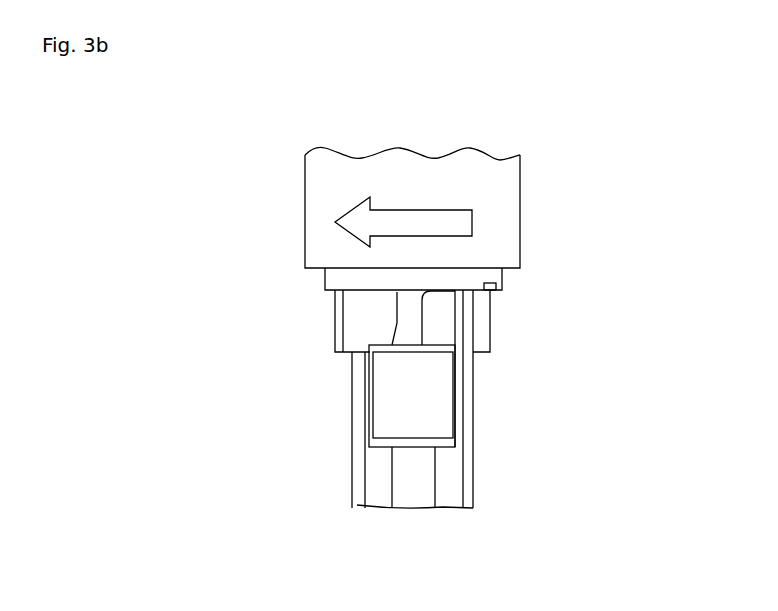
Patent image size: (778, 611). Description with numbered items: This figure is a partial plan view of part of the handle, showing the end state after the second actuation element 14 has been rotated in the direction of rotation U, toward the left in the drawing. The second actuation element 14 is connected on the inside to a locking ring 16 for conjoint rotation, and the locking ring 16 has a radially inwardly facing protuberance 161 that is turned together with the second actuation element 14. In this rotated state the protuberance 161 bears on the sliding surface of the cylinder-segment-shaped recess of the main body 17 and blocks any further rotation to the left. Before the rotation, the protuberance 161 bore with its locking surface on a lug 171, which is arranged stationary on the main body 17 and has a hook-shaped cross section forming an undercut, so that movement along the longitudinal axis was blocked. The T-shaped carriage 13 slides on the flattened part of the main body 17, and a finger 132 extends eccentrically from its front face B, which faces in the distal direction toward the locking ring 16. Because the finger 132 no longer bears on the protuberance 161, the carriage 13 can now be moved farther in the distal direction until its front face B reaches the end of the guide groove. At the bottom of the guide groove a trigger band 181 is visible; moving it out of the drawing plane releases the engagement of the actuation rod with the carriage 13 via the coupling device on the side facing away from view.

The second actuation element 14 is at (521, 175).
The direction of rotation U is at (420, 227).
The locking ring 16 is at (342, 274).
The protuberance 161 is at (455, 290).
The lug 171 is at (482, 305).
The finger 132 is at (442, 326).
The front face B is at (383, 344).
The carriage 13 is at (458, 388).
The main body 17 is at (472, 481).
The trigger band 181 is at (405, 497).